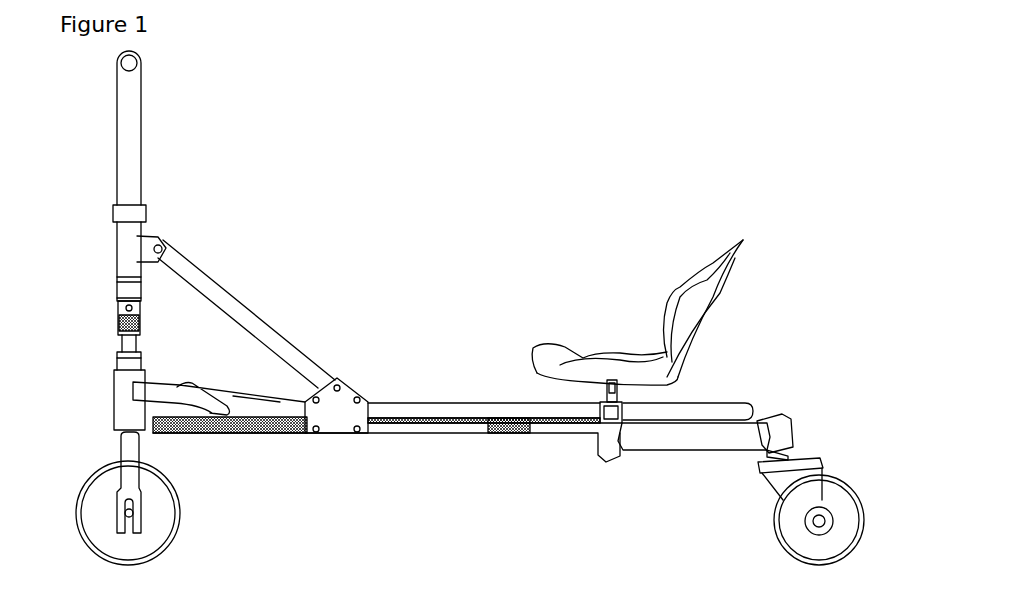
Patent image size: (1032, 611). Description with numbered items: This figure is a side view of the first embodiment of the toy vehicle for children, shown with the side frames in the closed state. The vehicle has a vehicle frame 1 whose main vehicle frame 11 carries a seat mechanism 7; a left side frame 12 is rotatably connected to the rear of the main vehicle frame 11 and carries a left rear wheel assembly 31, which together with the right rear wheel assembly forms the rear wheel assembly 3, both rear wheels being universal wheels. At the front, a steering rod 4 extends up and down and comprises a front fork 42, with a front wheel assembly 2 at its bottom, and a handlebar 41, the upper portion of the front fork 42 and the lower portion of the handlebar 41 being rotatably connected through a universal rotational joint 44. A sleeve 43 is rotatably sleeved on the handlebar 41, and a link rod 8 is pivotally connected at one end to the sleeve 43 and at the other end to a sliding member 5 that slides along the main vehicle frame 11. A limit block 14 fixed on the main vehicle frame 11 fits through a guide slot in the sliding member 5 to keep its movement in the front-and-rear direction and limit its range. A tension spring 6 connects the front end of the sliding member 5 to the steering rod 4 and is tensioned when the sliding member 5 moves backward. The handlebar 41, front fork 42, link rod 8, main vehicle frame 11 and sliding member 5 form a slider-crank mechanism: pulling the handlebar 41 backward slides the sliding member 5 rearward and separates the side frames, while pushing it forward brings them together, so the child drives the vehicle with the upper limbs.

The vehicle frame 1 is at (398, 397).
The front wheel assembly 2 is at (106, 530).
The rear wheel assembly 3 is at (838, 468).
The left rear wheel assembly 31 is at (838, 525).
The steering rod 4 is at (108, 370).
The handlebar 41 is at (130, 174).
The front fork 42 is at (126, 410).
The sleeve 43 is at (126, 242).
The universal rotational joint 44 is at (118, 318).
The sliding member 5 is at (347, 413).
The tension spring 6 is at (258, 433).
The seat mechanism 7 is at (681, 308).
The link rod 8 is at (243, 307).
The main vehicle frame 11 is at (437, 403).
The left side frame 12 is at (660, 440).
The limit block 14 is at (490, 435).